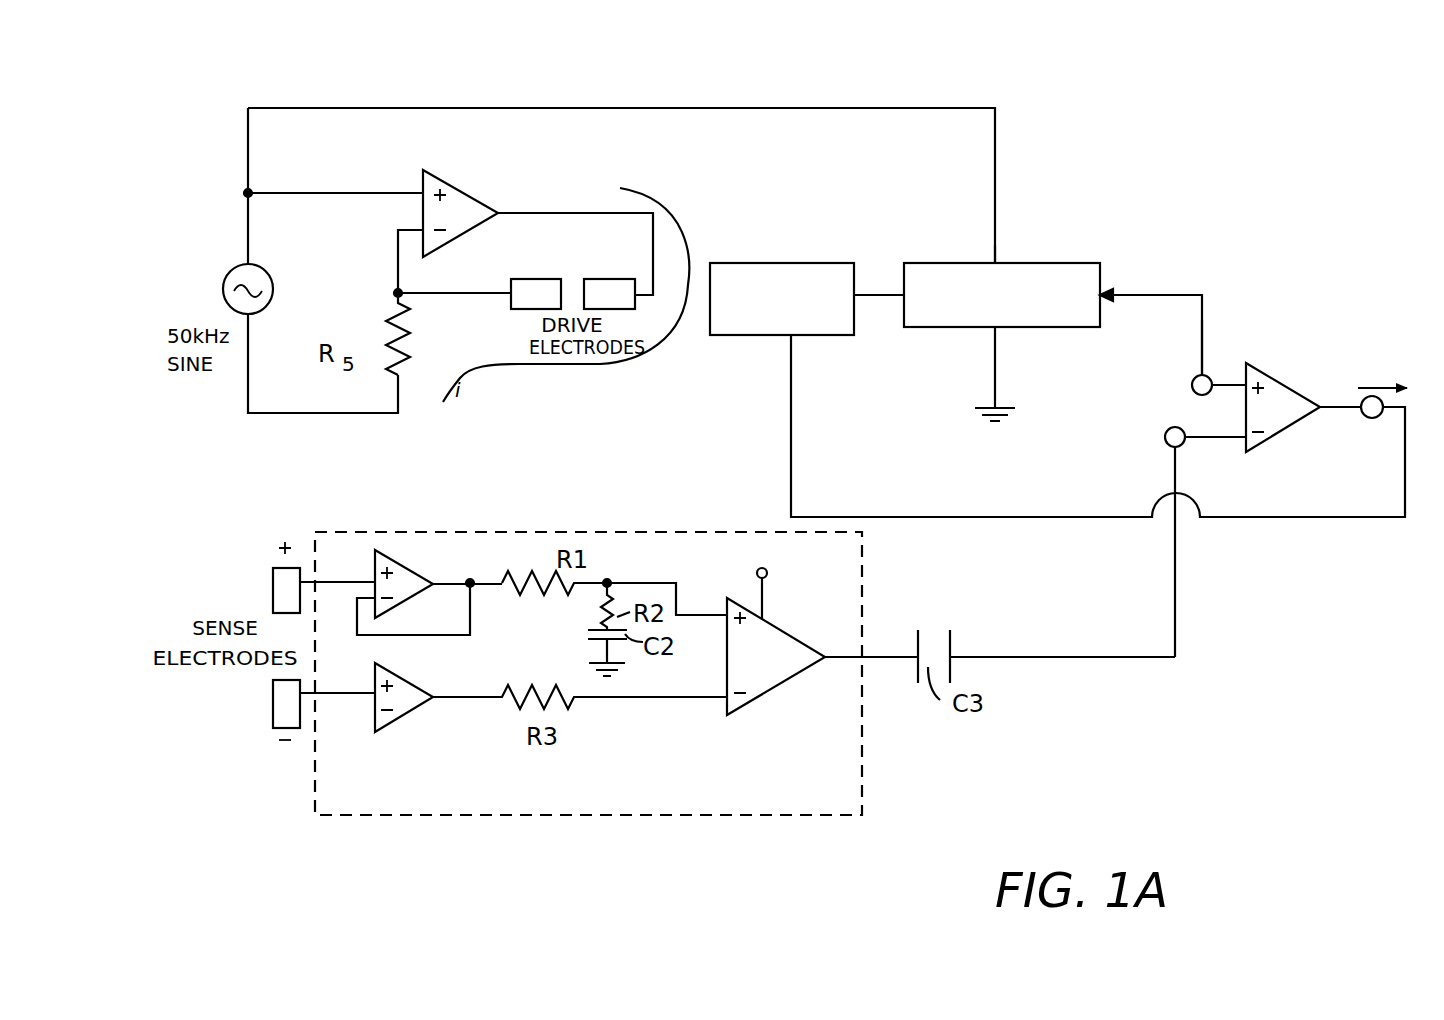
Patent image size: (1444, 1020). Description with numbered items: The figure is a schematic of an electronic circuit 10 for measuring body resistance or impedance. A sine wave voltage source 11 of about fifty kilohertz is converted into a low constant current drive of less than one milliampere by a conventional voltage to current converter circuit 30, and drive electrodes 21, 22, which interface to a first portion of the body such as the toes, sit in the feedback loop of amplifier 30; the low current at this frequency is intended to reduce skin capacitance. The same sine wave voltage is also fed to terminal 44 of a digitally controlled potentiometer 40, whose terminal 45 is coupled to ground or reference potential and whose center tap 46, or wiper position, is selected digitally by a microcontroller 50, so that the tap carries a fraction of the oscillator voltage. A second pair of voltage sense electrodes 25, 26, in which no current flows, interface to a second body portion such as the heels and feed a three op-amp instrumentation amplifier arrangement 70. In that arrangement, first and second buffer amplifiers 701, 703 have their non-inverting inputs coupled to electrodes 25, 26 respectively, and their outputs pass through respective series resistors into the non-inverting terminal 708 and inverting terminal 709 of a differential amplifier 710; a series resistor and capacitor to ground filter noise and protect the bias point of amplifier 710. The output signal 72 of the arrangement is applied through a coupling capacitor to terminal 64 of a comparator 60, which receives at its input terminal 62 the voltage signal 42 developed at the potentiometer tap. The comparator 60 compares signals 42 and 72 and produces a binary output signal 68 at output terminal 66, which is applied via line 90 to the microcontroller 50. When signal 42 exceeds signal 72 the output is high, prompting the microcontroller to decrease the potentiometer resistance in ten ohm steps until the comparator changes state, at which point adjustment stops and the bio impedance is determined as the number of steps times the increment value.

The electronic circuit 10 is at (1249, 151).
The sine wave voltage source 11 is at (223, 280).
The drive electrode 21 is at (532, 279).
The drive electrode 22 is at (597, 279).
The voltage sense electrode 25 is at (273, 583).
The voltage sense electrode 26 is at (273, 710).
The voltage to current converter circuit 30 is at (462, 186).
The digitally controlled potentiometer 40 is at (1015, 227).
The voltage signal 42 is at (1203, 345).
The terminal 44 is at (1010, 263).
The terminal 45 is at (998, 368).
The center tap 46 is at (1114, 290).
The microcontroller 50 is at (855, 280).
The comparator 60 is at (1283, 385).
The input terminal 62 is at (1194, 380).
The terminal 64 is at (1167, 430).
The output terminal 66 is at (1367, 424).
The output signal 68 is at (1375, 388).
The instrumentation amplifier arrangement 70 is at (766, 818).
The output signal 72 is at (1175, 470).
The line 90 is at (793, 458).
The first buffer amplifier 701 is at (410, 566).
The second buffer amplifier 703 is at (410, 676).
The non-inverting input terminal 708 is at (713, 612).
The inverting input terminal 709 is at (698, 698).
The differential amplifier 710 is at (780, 626).